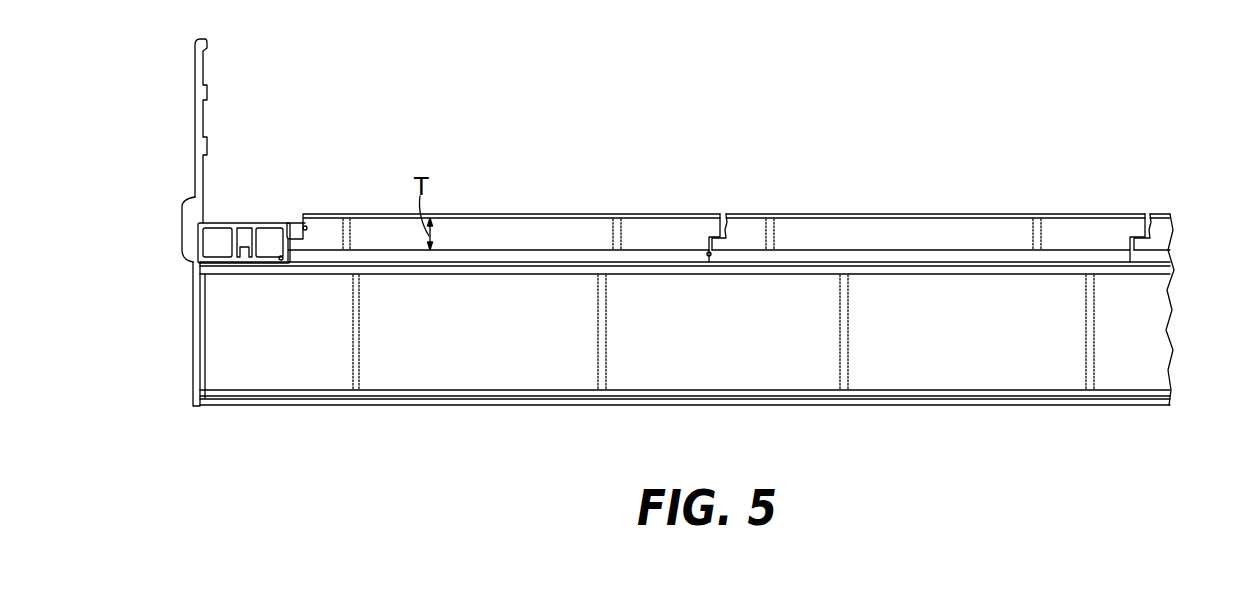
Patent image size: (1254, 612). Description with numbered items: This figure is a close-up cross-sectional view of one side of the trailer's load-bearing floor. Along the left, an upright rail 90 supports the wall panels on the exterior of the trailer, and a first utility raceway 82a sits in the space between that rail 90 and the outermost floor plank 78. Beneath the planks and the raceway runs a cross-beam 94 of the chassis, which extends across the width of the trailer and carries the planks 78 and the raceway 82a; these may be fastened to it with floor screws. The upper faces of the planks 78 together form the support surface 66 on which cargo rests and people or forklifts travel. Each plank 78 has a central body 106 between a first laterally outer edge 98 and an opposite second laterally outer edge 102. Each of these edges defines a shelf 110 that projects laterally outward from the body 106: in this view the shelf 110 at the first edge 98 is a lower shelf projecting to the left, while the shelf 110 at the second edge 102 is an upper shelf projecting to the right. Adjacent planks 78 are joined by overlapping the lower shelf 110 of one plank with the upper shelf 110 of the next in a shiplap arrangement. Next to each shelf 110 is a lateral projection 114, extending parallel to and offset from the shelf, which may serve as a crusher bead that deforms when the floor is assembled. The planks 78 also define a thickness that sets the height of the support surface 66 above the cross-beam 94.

The support surface 66 is at (840, 200).
The floor plank 78 is at (555, 214).
The first utility raceway 82a is at (240, 222).
The rail 90 is at (197, 97).
The cross-beam 94 is at (270, 380).
The first laterally outer edge 98 is at (304, 201).
The second laterally outer edge 102 is at (711, 200).
The body 106 is at (475, 233).
The shelf 110 is at (295, 257).
The lateral projection 114 is at (307, 227).